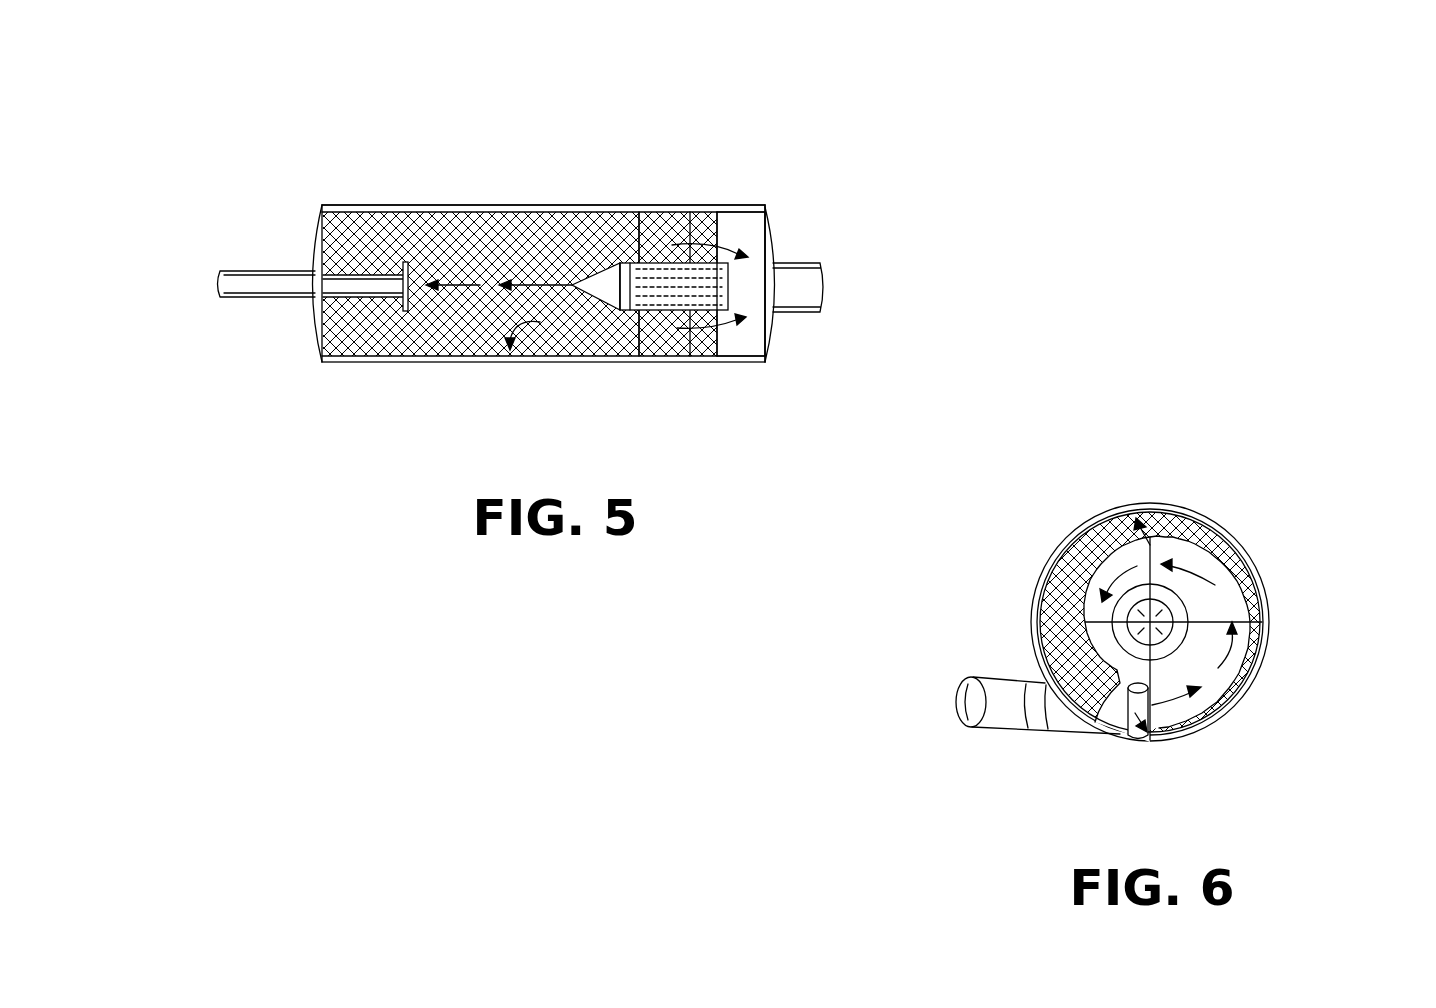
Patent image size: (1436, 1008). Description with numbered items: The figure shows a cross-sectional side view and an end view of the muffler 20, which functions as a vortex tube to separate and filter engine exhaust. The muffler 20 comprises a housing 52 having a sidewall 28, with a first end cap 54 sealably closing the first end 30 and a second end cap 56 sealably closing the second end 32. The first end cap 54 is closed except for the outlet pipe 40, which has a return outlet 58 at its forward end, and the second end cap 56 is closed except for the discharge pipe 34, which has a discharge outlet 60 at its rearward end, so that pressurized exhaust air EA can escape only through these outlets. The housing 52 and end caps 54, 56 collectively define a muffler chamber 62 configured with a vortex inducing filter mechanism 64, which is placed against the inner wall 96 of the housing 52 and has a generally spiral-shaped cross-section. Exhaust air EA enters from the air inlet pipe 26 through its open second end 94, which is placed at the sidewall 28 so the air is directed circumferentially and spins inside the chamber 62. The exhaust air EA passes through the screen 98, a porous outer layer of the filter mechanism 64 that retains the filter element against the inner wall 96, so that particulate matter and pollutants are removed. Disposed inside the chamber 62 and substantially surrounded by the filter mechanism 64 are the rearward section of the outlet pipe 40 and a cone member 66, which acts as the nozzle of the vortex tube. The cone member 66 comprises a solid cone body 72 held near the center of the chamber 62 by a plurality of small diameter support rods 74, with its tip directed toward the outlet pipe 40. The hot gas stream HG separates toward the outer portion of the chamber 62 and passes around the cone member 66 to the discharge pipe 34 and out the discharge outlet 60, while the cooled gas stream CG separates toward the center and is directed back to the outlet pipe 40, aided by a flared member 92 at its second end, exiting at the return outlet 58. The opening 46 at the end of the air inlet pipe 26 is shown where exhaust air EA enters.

In FIG. 5, the muffler 20 is at (645, 113).
In FIG. 6, the muffler 20 is at (1328, 532).
In FIG. 6, the air inlet pipe 26 is at (1012, 728).
In FIG. 5, the sidewall 28 is at (441, 196).
In FIG. 6, the sidewall 28 is at (1058, 529).
In FIG. 5, the first end 30 is at (324, 388).
In FIG. 5, the second end 32 is at (766, 190).
In FIG. 5, the discharge pipe 34 is at (790, 275).
In FIG. 5, the outlet pipe 40 is at (253, 282).
In FIG. 6, the inlet opening 46 is at (942, 713).
In FIG. 5, the housing 52 is at (368, 205).
In FIG. 6, the housing 52 is at (1204, 510).
In FIG. 5, the first end cap 54 is at (318, 252).
In FIG. 5, the second end cap 56 is at (772, 318).
In FIG. 5, the return outlet 58 is at (200, 288).
In FIG. 5, the discharge outlet 60 is at (848, 278).
In FIG. 5, the muffler chamber 62 is at (750, 352).
In FIG. 6, the muffler chamber 62 is at (1232, 704).
In FIG. 5, the vortex inducing filter mechanism 64 is at (526, 228).
In FIG. 6, the vortex inducing filter mechanism 64 is at (1035, 656).
In FIG. 5, the cone member 66 is at (590, 272).
In FIG. 6, the cone member 66 is at (1180, 640).
In FIG. 5, the cone body 72 is at (612, 300).
In FIG. 5, the support rods 74 is at (645, 222).
In FIG. 6, the support rods 74 is at (1150, 578).
In FIG. 5, the flared member 92 is at (405, 312).
In FIG. 6, the second end of air inlet pipe 94 is at (1152, 742).
In FIG. 5, the inner wall 96 is at (535, 338).
In FIG. 6, the inner wall 96 is at (1118, 537).
In FIG. 6, the screen 98 is at (1062, 578).
In FIG. 5, the cooled gas stream CG is at (460, 290).
In FIG. 5, the hot gas stream HG is at (697, 330).
In FIG. 6, the exhaust air EA is at (1177, 702).